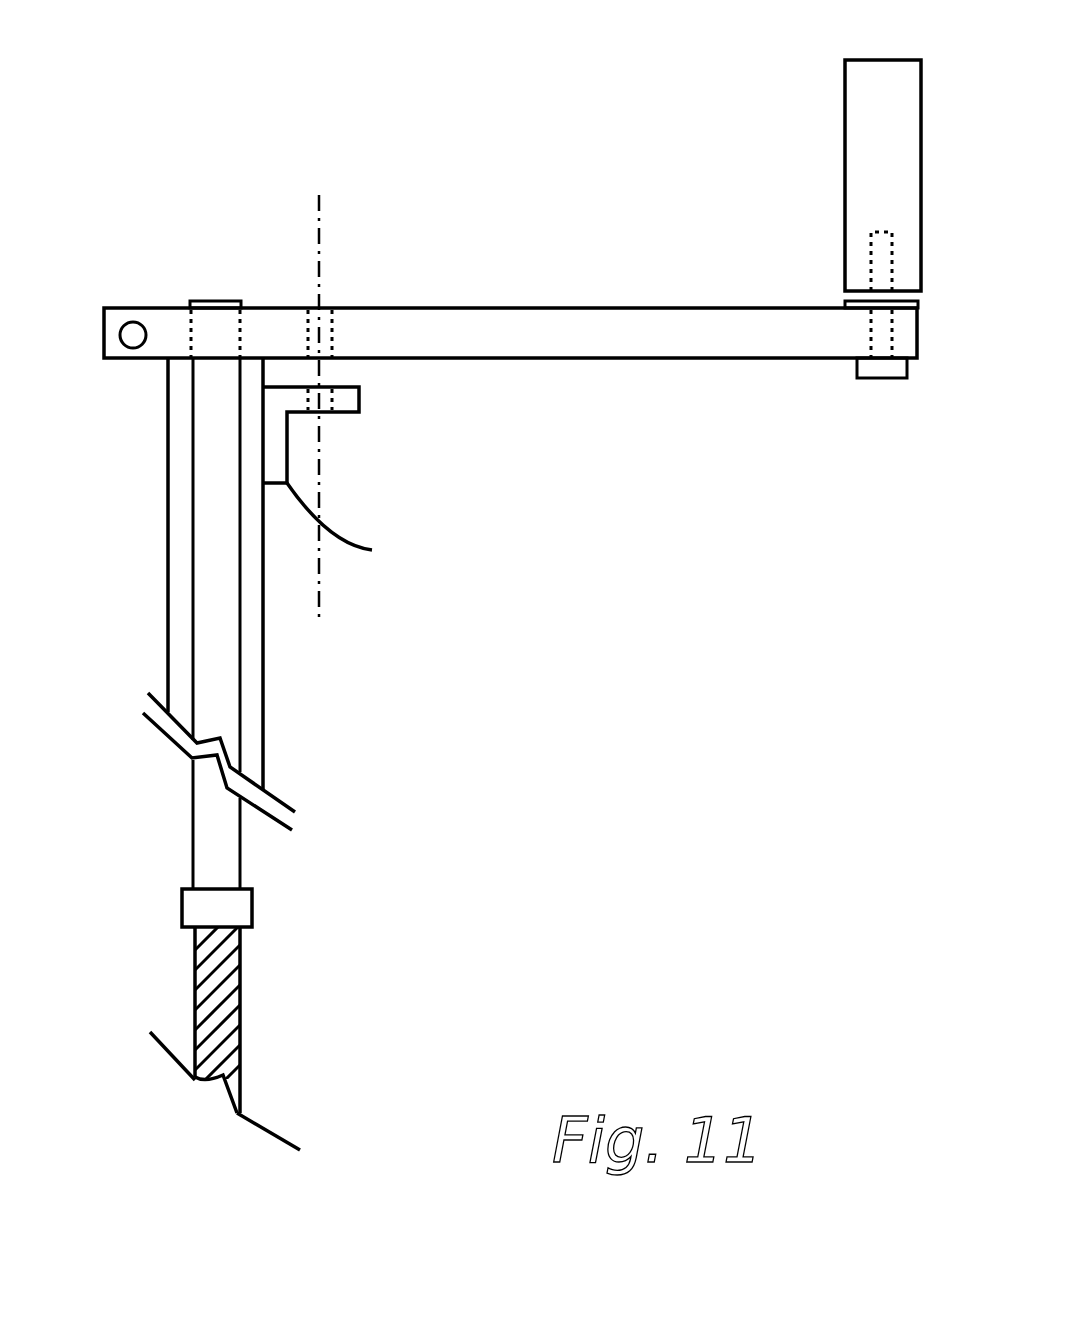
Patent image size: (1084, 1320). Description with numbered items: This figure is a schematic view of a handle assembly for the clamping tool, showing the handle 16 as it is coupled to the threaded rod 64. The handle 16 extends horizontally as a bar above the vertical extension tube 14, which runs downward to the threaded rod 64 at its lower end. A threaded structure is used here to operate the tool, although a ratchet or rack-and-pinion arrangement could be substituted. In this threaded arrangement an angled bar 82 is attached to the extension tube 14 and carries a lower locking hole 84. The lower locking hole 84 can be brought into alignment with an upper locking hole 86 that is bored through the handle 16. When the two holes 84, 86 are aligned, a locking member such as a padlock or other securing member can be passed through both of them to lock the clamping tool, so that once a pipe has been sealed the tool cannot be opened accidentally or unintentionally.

The handle 16 is at (684, 296).
The extension tube 14 is at (158, 458).
The angled bar 82 is at (352, 528).
The lower locking hole 84 is at (337, 427).
The upper locking hole 86 is at (336, 371).
The threaded rod 64 is at (255, 960).